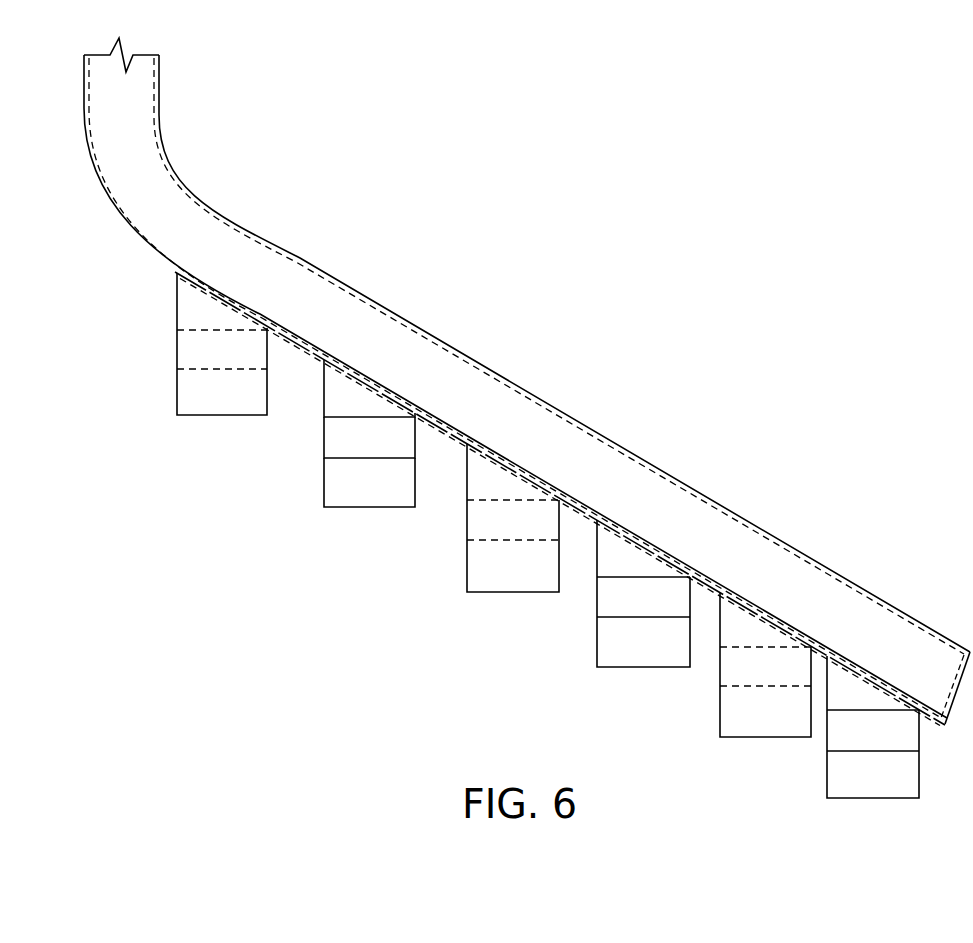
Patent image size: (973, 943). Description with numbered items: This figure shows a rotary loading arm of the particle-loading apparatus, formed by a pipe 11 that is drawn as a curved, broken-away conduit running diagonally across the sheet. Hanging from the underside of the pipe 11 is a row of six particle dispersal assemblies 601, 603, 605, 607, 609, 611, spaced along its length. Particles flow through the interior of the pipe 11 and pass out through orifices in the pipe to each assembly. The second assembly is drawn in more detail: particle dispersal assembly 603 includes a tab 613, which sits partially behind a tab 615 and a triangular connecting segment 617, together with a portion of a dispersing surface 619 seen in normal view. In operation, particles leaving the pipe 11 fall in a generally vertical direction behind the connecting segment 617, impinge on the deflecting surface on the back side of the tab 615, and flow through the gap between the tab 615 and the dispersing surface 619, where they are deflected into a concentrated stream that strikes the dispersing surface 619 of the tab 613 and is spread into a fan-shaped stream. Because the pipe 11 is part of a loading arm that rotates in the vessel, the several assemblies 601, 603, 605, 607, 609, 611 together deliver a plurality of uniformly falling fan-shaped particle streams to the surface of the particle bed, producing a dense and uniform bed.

The pipe 11 is at (558, 413).
The particle dispersal assembly 601 is at (166, 347).
The particle dispersal assembly 603 is at (323, 477).
The particle dispersal assembly 605 is at (531, 598).
The particle dispersal assembly 607 is at (653, 673).
The particle dispersal assembly 609 is at (782, 743).
The particle dispersal assembly 611 is at (885, 800).
The tab 613 is at (324, 484).
The tab 615 is at (324, 447).
The triangular connecting segment 617 is at (324, 403).
The dispersing surface 619 is at (379, 492).